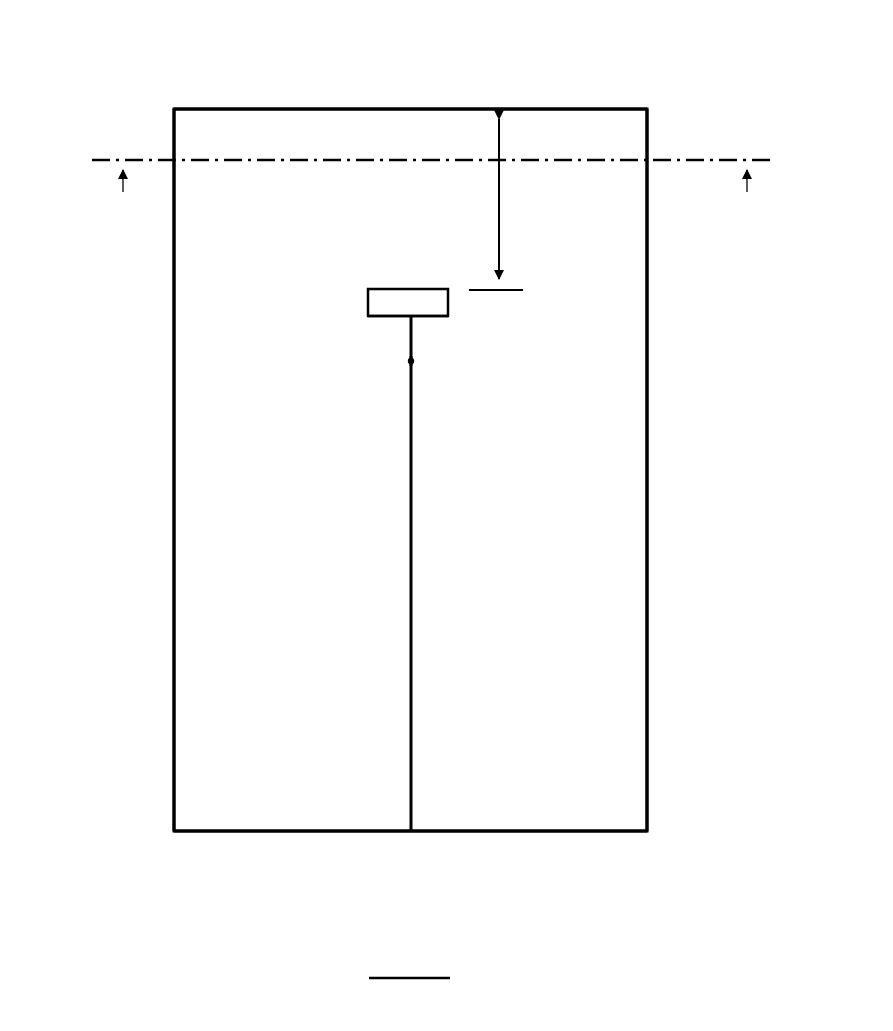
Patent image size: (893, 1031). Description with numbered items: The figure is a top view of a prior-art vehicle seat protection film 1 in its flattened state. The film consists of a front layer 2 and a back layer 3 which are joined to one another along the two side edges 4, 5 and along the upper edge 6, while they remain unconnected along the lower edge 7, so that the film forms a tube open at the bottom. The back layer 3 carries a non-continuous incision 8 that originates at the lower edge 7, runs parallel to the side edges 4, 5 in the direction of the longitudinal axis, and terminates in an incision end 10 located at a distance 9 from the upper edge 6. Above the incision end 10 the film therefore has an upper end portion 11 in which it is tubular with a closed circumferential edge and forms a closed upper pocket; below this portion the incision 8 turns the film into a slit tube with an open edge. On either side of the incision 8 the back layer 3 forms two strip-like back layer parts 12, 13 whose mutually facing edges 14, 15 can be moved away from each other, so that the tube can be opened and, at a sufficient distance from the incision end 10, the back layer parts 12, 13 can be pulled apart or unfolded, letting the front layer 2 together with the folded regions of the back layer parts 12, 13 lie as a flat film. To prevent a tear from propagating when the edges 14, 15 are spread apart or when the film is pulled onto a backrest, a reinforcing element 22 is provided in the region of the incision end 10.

The vehicle seat protection film 1 is at (140, 370).
The front layer 2 is at (592, 446).
The back layer 3 is at (296, 478).
The side edge 4 is at (174, 469).
The side edge 5 is at (647, 583).
The upper edge 6 is at (457, 109).
The lower edge 7 is at (483, 832).
The incision 8 is at (411, 526).
The distance 9 is at (499, 183).
The incision end 10 is at (400, 319).
The upper end portion 11 is at (442, 146).
The back layer part 12 is at (282, 723).
The back layer part 13 is at (499, 723).
The edge 14 is at (411, 361).
The edge 15 is at (411, 361).
The reinforcing element 22 is at (410, 306).